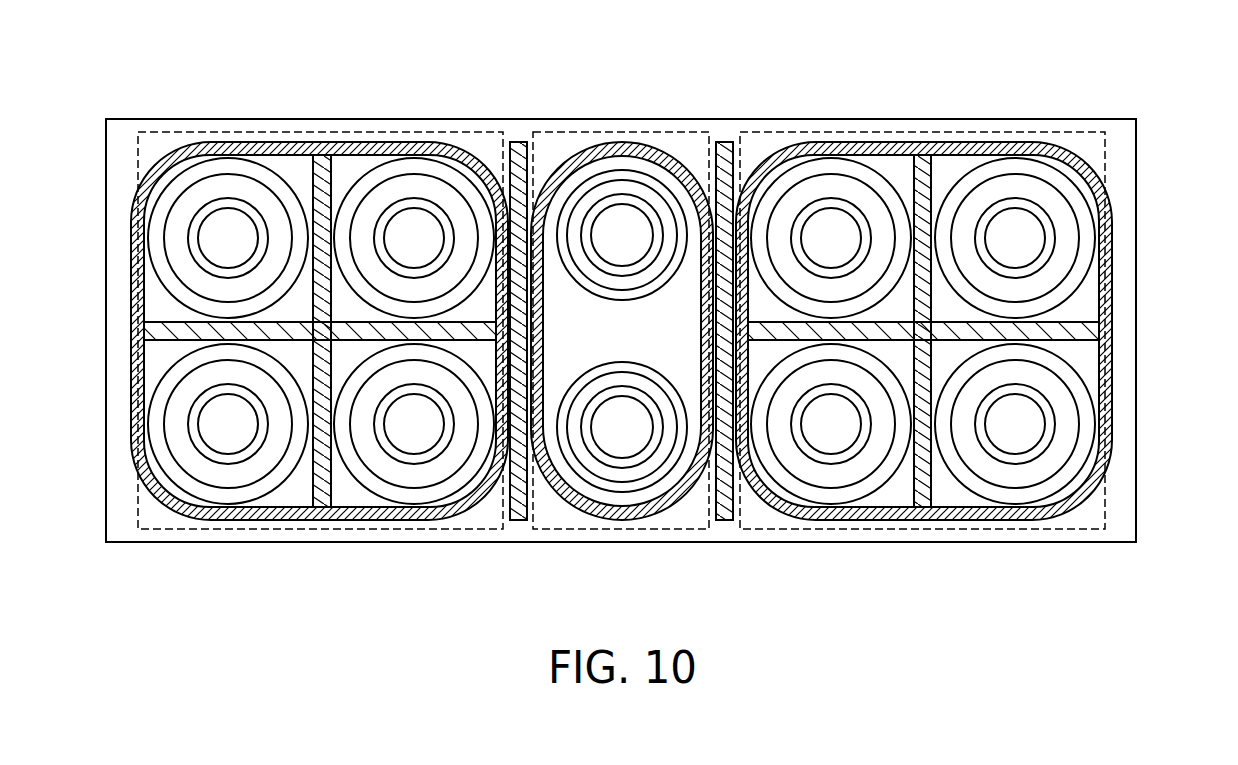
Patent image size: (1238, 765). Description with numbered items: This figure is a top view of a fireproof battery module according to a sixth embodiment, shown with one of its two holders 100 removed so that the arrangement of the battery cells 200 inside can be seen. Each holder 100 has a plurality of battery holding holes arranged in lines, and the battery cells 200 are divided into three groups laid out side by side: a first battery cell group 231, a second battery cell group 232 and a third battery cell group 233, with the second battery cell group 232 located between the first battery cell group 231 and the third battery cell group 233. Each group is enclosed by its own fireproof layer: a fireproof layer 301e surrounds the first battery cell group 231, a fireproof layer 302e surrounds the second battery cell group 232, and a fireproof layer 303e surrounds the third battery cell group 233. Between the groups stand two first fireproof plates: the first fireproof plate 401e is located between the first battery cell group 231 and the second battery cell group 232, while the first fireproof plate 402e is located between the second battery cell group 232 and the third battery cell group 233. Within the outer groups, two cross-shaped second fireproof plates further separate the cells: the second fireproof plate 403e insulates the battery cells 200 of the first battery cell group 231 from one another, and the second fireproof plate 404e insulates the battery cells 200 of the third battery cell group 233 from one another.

The holder 100 is at (1120, 139).
The battery cell 200 is at (228, 238).
The first battery cell group 231 is at (313, 132).
The second battery cell group 232 is at (571, 132).
The third battery cell group 233 is at (917, 132).
The fireproof layer 301e is at (265, 512).
The fireproof layer 302e is at (672, 505).
The fireproof layer 303e is at (895, 512).
The first fireproof plate 401e is at (518, 505).
The first fireproof plate 402e is at (722, 510).
The second fireproof plate 403e is at (322, 472).
The second fireproof plate 404e is at (925, 473).